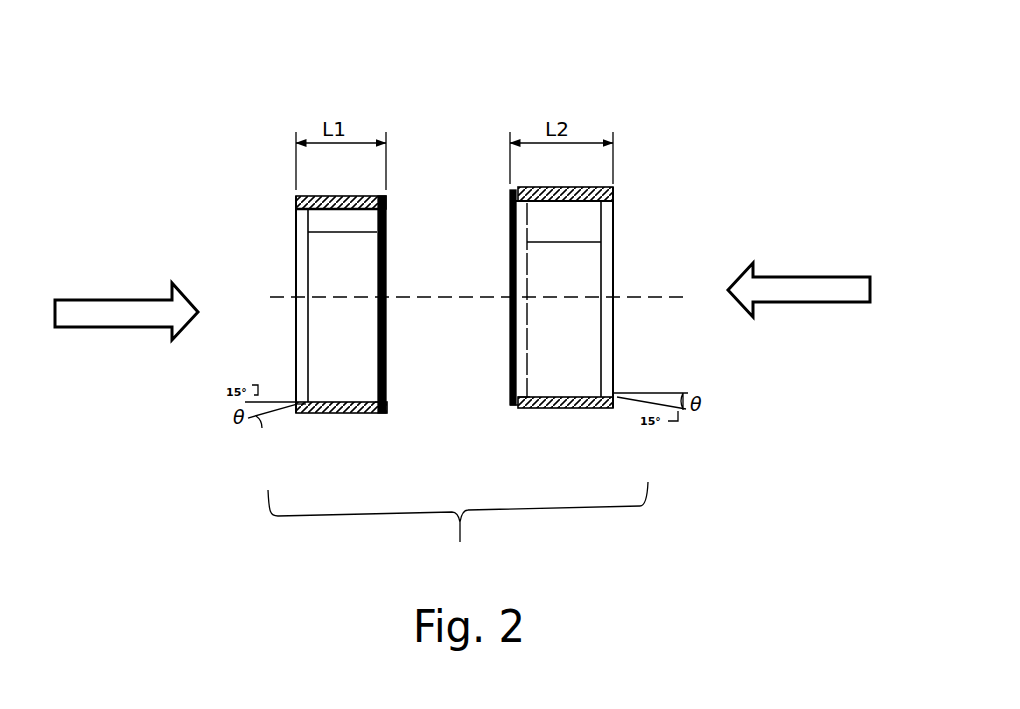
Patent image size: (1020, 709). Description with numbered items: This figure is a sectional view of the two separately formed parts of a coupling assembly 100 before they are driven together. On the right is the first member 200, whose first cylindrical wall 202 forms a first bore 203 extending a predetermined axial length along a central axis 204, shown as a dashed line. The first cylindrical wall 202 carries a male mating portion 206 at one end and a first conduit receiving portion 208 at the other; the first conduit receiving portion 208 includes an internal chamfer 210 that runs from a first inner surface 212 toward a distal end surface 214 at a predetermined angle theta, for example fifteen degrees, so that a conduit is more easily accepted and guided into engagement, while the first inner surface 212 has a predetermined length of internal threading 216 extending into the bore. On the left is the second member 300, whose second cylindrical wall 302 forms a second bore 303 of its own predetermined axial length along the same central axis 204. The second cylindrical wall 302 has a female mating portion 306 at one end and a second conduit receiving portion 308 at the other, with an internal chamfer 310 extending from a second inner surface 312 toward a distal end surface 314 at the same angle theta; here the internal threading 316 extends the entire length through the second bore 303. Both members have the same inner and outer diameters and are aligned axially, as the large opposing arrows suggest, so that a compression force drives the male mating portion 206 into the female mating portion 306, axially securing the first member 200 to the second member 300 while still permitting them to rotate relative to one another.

The coupling assembly 100 is at (458, 523).
The first member 200 is at (605, 254).
The first cylindrical wall 202 is at (562, 408).
The first bore 203 is at (565, 323).
The central axis 204 is at (670, 298).
The male mating portion 206 is at (515, 398).
The first conduit receiving portion 208 is at (605, 218).
The internal chamfer 210 is at (585, 358).
The first inner surface 212 is at (568, 403).
The distal end surface 214 is at (613, 193).
The internal threading 216 is at (527, 238).
The second member 300 is at (321, 288).
The second cylindrical wall 302 is at (336, 412).
The second bore 303 is at (342, 355).
The female mating portion 306 is at (384, 414).
The second conduit receiving portion 308 is at (298, 220).
The internal chamfer 310 is at (325, 337).
The second inner surface 312 is at (352, 403).
The distal end surface 314 is at (298, 404).
The internal threading 316 is at (408, 232).